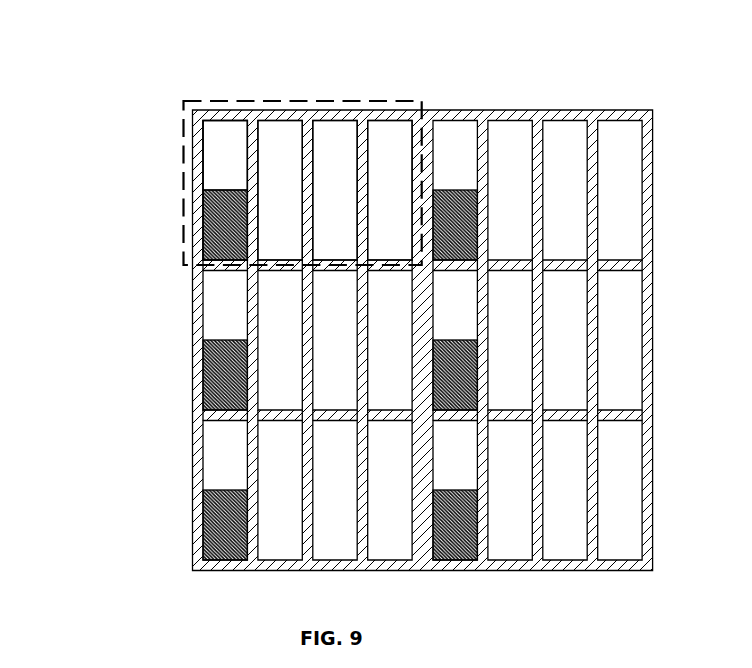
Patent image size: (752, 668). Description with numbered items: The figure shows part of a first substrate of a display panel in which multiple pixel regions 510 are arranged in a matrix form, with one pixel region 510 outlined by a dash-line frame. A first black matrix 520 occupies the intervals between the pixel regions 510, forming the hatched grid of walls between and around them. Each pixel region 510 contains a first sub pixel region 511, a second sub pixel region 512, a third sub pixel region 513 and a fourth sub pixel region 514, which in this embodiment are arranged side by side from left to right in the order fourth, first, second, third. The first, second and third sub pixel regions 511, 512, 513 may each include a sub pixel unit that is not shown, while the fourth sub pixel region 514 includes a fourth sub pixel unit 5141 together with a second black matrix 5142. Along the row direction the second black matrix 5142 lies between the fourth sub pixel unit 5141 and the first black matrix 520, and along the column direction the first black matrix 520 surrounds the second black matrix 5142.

The pixel region 510 is at (210, 101).
The first sub pixel region 511 is at (268, 135).
The second sub pixel region 512 is at (333, 137).
The third sub pixel region 513 is at (385, 137).
The fourth sub pixel region 514 is at (95, 135).
The fourth sub pixel unit 5141 is at (222, 177).
The second black matrix 5142 is at (214, 228).
The first black matrix 520 is at (534, 127).